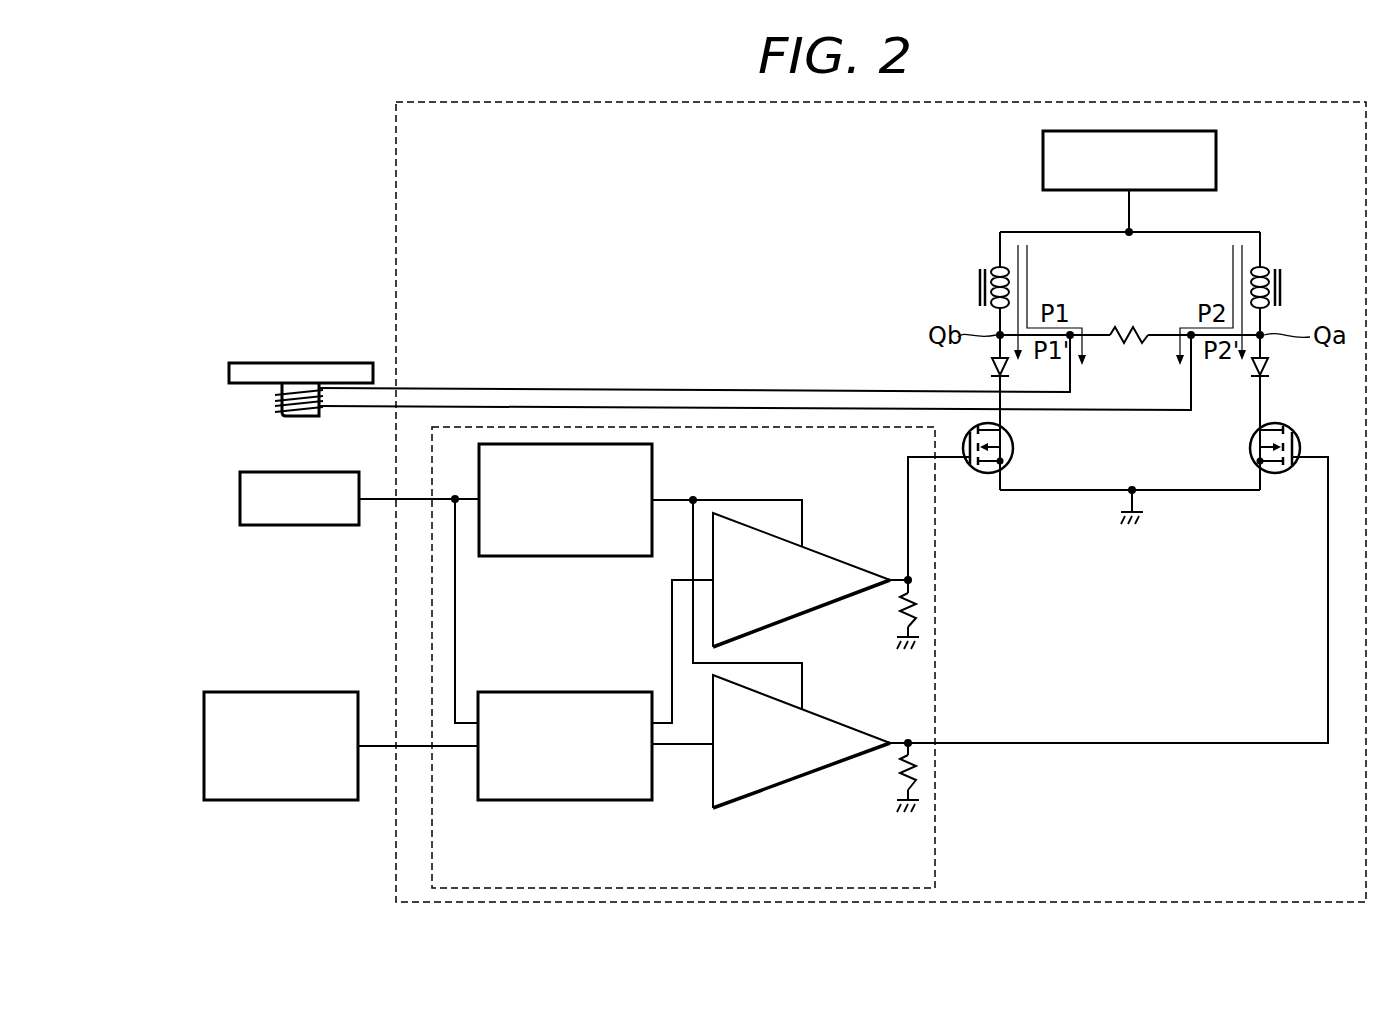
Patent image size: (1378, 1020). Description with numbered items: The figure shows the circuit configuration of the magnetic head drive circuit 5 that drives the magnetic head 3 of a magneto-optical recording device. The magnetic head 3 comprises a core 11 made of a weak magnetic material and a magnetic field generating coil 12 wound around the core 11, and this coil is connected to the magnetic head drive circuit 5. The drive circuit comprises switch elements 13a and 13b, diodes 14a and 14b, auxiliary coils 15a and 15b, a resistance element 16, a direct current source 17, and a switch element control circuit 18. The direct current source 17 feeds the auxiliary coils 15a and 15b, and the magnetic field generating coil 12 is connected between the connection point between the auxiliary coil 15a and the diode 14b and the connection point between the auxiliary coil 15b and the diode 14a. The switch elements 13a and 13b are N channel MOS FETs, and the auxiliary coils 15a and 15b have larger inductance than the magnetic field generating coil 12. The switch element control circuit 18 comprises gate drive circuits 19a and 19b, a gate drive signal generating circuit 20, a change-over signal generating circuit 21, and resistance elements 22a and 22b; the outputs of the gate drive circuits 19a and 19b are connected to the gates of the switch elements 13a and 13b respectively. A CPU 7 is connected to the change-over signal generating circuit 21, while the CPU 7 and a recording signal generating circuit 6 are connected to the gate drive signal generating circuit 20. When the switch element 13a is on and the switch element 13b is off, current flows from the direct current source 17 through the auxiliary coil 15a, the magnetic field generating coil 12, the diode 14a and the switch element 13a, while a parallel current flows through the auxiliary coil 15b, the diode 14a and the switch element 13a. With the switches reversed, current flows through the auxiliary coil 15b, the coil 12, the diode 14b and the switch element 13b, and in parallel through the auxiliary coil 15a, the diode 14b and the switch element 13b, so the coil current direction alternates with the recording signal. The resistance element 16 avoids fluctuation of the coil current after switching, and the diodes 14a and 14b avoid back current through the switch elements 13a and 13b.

The magnetic head 3 is at (345, 320).
The magnetic head drive circuit 5 is at (522, 102).
The recording signal generating circuit 6 is at (330, 802).
The CPU 7 is at (330, 527).
The core 11 is at (331, 371).
The magnetic field generating coil 12 is at (272, 387).
The switch element 13a is at (1250, 440).
The switch element 13b is at (1013, 440).
The diode 14a is at (1269, 370).
The diode 14b is at (991, 370).
The auxiliary coil 15a is at (977, 289).
The auxiliary coil 15b is at (1284, 289).
The resistance element 16 is at (1134, 326).
The direct current source 17 is at (1216, 150).
The switch element control circuit 18 is at (936, 866).
The gate drive circuit 19a is at (832, 771).
The gate drive circuit 19b is at (832, 606).
The gate drive signal generating circuit 20 is at (603, 802).
The change-over signal generating circuit 21 is at (616, 558).
The resistance element 22a is at (916, 772).
The resistance element 22b is at (916, 610).